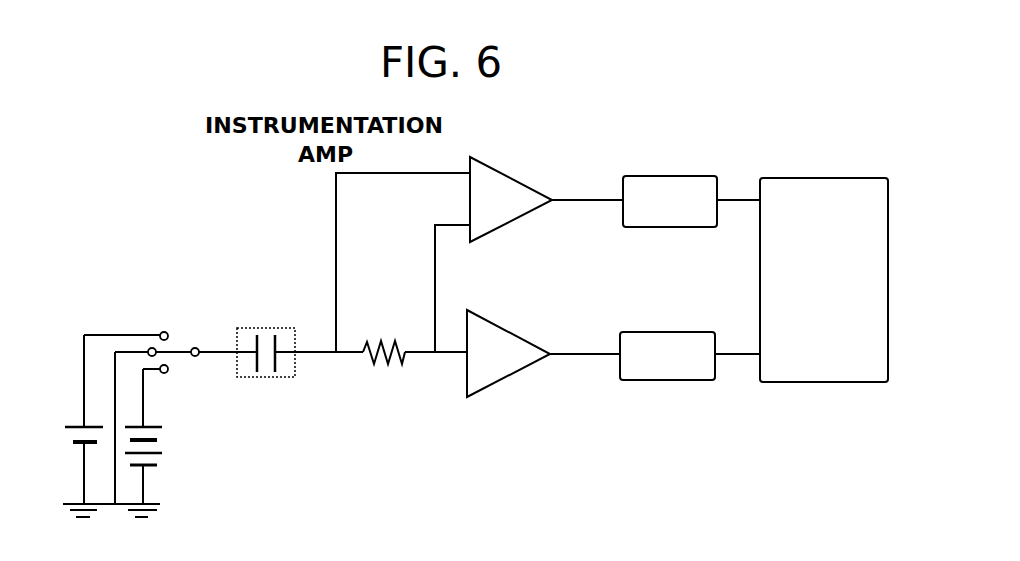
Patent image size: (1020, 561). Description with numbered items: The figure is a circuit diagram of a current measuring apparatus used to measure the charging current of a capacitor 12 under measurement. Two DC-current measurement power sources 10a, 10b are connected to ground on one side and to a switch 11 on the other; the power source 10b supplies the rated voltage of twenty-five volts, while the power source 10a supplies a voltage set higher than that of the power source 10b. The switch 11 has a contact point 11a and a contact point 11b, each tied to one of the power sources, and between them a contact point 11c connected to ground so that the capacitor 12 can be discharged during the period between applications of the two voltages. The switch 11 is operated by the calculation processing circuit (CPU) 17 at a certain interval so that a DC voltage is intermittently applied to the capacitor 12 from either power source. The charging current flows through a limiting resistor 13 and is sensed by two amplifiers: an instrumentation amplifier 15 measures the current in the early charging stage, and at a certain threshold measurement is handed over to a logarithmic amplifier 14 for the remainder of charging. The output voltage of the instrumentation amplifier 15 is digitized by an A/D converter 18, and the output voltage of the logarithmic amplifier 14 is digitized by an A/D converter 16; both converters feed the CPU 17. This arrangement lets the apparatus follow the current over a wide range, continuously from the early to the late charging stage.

The DC-current measurement power source 10a is at (163, 458).
The DC-current measurement power source 10b is at (73, 427).
The switch 11 is at (179, 350).
The contact point 11a is at (162, 332).
The contact point 11b is at (168, 373).
The contact point 11c is at (148, 350).
The capacitor under measurement 12 is at (265, 332).
The limiting resistor 13 is at (386, 342).
The logarithmic amplifier 14 is at (513, 332).
The instrumentation amplifier 15 is at (518, 178).
The A/D converter 16 is at (668, 330).
The calculation processing circuit (CPU) 17 is at (838, 177).
The A/D converter 18 is at (672, 175).